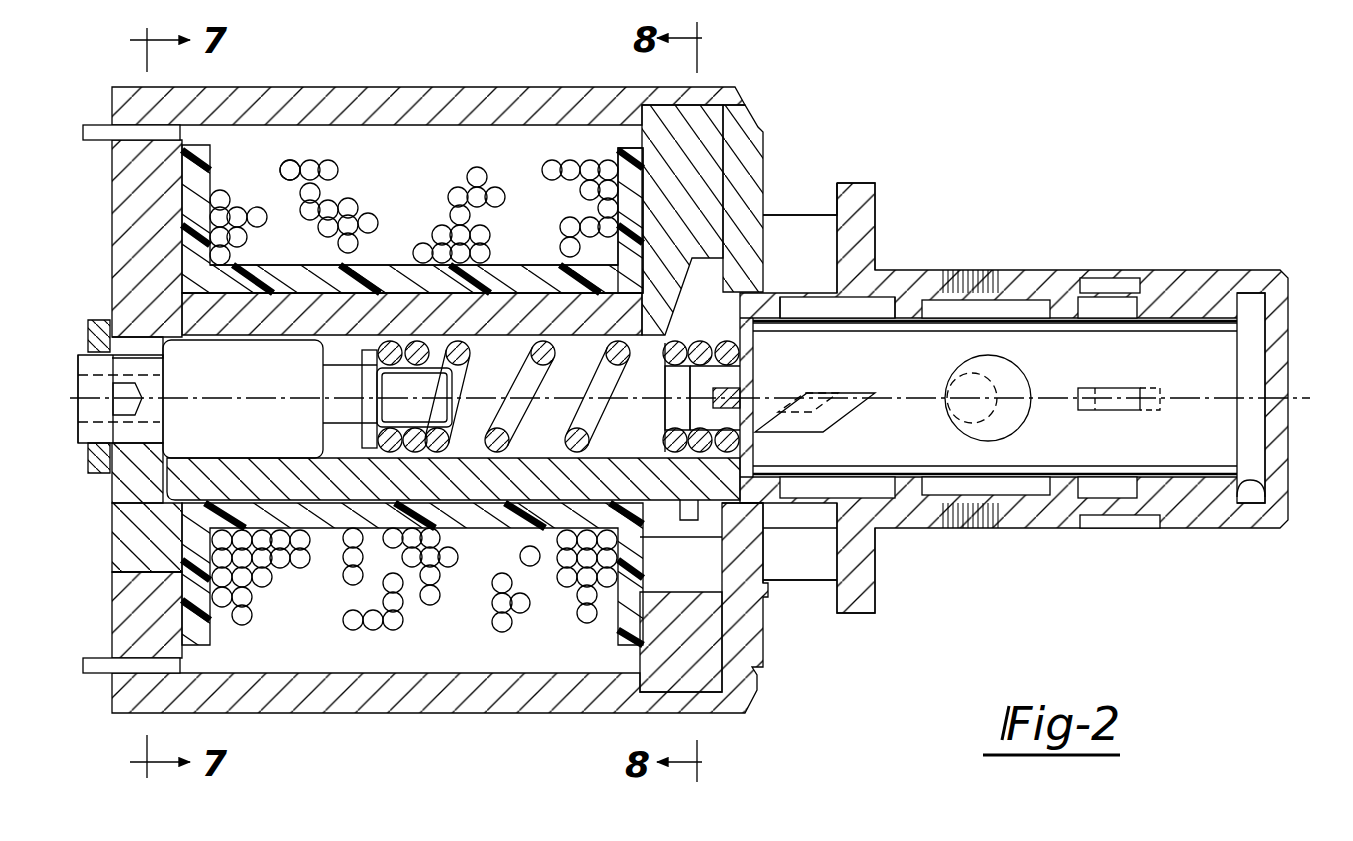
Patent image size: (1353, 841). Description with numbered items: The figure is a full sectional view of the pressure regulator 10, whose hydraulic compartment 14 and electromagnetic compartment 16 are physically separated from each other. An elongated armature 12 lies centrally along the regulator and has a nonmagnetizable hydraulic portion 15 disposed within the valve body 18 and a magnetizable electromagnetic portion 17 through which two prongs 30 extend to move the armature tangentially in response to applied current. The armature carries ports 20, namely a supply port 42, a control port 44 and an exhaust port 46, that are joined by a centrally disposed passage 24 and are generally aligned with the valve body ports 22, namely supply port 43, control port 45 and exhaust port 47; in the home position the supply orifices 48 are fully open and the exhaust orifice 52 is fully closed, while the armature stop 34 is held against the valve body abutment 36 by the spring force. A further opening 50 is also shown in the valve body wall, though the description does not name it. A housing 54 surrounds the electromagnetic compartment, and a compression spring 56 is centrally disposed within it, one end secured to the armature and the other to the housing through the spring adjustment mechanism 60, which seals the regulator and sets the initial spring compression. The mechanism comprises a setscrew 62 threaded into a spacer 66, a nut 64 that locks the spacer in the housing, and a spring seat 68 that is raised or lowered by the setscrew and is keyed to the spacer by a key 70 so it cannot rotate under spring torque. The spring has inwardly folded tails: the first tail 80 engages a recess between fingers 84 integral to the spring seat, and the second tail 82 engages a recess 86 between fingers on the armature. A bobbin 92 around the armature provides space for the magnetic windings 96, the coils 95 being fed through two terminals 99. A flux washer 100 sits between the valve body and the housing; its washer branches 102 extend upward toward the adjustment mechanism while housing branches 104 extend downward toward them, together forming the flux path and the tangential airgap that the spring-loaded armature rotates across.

The pressure regulator 10 is at (812, 165).
The armature 12 is at (1068, 305).
The hydraulic compartment 14 is at (1226, 245).
The hydraulic portion 15 is at (1022, 498).
The electromagnetic compartment 16 is at (425, 70).
The electromagnetic portion 17 is at (455, 445).
The valve body 18 is at (1248, 528).
The armature ports 20 is at (845, 418).
The valve body ports 22 is at (975, 530).
The passage 24 is at (1258, 468).
The prongs 30 is at (560, 470).
The armature stop 34 is at (688, 525).
The valve body abutment 36 is at (714, 515).
The supply port 42 is at (1140, 305).
The supply port 43 is at (1150, 282).
The control port 44 is at (1028, 300).
The control port 45 is at (995, 270).
The exhaust port 46 is at (880, 320).
The exhaust port 47 is at (845, 265).
The supply orifices 48 is at (1112, 388).
The port 50 is at (968, 392).
The exhaust orifice 52 is at (848, 392).
The housing 54 is at (100, 211).
The compression spring 56 is at (528, 392).
The spring adjustment mechanism 60 is at (75, 446).
The setscrew 62 is at (123, 393).
The nut 64 is at (104, 320).
The spacer 66 is at (137, 440).
The spring seat 68 is at (113, 535).
The key 70 is at (240, 370).
The first tail 80 is at (372, 420).
The second tail 82 is at (666, 428).
The fingers 84 is at (742, 318).
The recess 86 is at (700, 345).
The bobbin 92 is at (624, 150).
The coils 95 is at (478, 200).
The magnetic windings 96 is at (280, 255).
The terminals 99 is at (100, 132).
The flux washer 100 is at (682, 108).
The washer branches 102 is at (565, 290).
The housing branches 104 is at (296, 310).